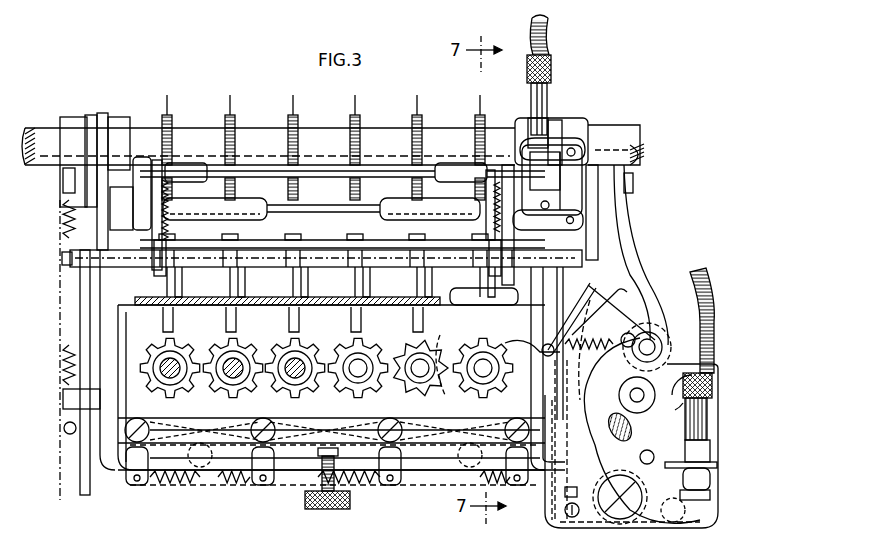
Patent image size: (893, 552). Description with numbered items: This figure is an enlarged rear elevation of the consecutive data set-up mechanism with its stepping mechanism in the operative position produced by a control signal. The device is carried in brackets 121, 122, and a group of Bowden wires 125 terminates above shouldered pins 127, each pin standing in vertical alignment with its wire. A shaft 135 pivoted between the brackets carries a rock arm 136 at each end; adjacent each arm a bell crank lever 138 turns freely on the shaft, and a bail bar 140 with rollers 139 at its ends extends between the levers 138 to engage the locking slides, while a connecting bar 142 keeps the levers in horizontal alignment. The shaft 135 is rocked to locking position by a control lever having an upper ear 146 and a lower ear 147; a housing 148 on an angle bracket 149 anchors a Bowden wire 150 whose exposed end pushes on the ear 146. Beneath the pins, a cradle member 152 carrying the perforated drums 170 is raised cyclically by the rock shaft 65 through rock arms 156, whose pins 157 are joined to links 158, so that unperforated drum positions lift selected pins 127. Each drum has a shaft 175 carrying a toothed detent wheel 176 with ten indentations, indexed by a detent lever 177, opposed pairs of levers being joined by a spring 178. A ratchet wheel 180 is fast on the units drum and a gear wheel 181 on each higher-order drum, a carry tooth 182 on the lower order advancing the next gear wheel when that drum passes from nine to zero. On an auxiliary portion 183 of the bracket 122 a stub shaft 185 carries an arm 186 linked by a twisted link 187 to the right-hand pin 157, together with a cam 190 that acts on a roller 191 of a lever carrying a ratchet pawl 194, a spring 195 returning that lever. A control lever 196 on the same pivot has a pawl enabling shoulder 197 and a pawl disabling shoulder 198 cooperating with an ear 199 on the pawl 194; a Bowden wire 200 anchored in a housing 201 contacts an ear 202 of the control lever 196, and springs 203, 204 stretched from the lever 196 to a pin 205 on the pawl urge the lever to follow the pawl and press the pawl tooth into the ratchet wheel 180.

The rock shaft 65 is at (620, 135).
The bracket 121 is at (104, 114).
The bracket 122 is at (553, 240).
The Bowden wires 125 is at (291, 117).
The shouldered pins 127 is at (354, 316).
The shaft 135 is at (398, 212).
The rock arm 136 is at (162, 260).
The bell crank lever 138 is at (157, 160).
The rollers 139 is at (75, 258).
The bail bar 140 is at (336, 262).
The connecting bar 142 is at (451, 165).
The ear 146 is at (534, 160).
The ear 147 is at (610, 200).
The housing 148 is at (537, 118).
The angle bracket 149 is at (572, 140).
The Bowden wire 150 is at (546, 34).
The cradle member 152 is at (215, 480).
The rock arms 156 is at (92, 117).
The pin 157 is at (600, 190).
The links 158 is at (82, 484).
The perforated drums 170 is at (165, 345).
The shaft 175 is at (362, 381).
The toothed detent wheels 176 is at (402, 345).
The detent lever 177 is at (137, 482).
The spring 178 is at (290, 486).
The ratchet wheel 180 is at (457, 346).
The gear wheel 181 is at (421, 374).
The carry tooth 182 is at (482, 373).
The auxiliary portion 183 is at (716, 432).
The stub shaft 185 is at (640, 430).
The arm 186 is at (648, 338).
The twisted link 187 is at (628, 285).
The cam 190 is at (712, 452).
The roller 191 is at (652, 332).
The ratchet pawl 194 is at (527, 345).
The spring 195 is at (553, 489).
The control lever 196 is at (700, 536).
The pawl enabling shoulder 197 is at (570, 296).
The pawl disabling shoulder 198 is at (600, 282).
The ear 199 is at (597, 330).
The Bowden wire 200 is at (705, 292).
The housing 201 is at (718, 447).
The ear 202 is at (722, 491).
The spring 203 is at (615, 333).
The spring 204 is at (625, 440).
The pin 205 is at (546, 300).